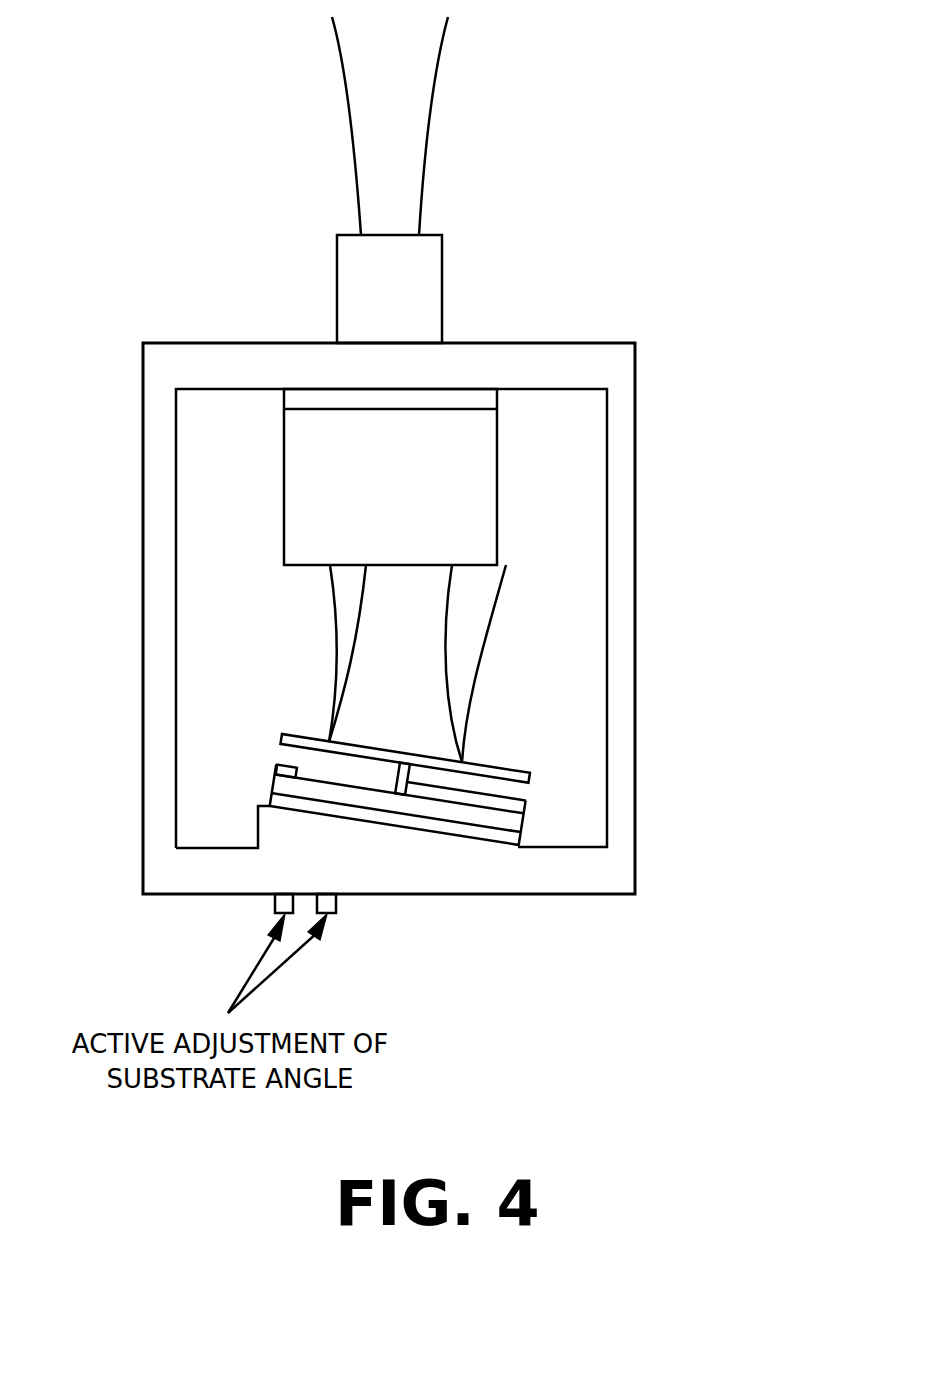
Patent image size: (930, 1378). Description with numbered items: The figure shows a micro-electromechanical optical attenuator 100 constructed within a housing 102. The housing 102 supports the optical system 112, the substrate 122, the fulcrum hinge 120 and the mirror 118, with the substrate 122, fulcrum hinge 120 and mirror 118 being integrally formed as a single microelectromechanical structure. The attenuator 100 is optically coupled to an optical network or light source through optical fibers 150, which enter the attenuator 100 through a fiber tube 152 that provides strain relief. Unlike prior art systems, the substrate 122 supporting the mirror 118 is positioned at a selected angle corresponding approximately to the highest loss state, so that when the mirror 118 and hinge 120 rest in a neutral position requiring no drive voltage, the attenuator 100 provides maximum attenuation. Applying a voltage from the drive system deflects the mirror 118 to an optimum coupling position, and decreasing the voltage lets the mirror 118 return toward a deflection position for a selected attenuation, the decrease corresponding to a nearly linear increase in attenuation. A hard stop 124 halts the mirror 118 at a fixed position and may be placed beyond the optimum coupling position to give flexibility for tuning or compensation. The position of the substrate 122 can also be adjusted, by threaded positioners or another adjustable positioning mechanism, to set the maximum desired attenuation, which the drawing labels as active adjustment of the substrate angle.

The attenuator 100 is at (569, 941).
The housing 102 is at (622, 605).
The optical system 112 is at (468, 519).
The mirror 118 is at (527, 768).
The fulcrum hinge 120 is at (510, 800).
The substrate 122 is at (507, 822).
The hard stop 124 is at (292, 763).
The optical fibers 150 is at (428, 120).
The fiber tube 152 is at (442, 262).